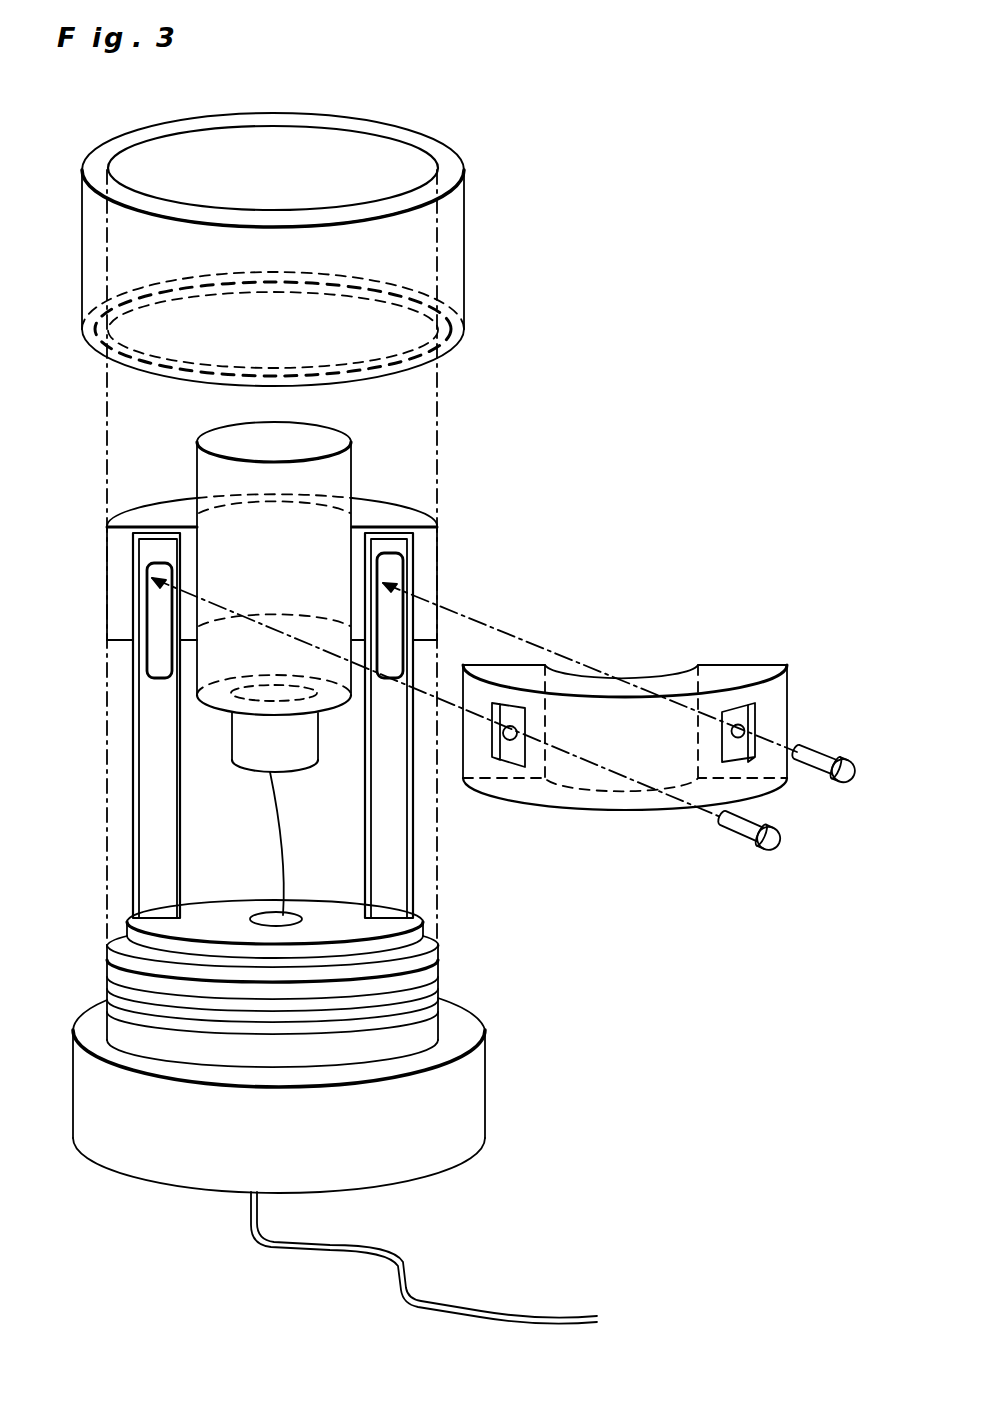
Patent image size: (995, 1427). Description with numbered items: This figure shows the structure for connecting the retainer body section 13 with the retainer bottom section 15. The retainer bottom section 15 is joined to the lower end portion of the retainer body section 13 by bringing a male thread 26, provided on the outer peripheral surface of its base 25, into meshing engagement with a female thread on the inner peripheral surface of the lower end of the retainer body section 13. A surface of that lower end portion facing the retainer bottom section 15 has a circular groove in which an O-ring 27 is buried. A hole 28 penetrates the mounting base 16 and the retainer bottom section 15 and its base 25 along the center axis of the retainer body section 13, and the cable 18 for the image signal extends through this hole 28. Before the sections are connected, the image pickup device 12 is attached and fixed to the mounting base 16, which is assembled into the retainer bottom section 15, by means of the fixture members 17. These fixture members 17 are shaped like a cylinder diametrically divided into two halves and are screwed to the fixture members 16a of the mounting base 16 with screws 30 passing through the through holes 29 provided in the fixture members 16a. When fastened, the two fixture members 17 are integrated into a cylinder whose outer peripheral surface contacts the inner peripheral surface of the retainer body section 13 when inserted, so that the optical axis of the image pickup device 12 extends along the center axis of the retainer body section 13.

The image pickup device 12 is at (352, 460).
The retainer body section 13 is at (465, 256).
The retainer bottom section 15 is at (485, 1122).
The mounting base 16 is at (128, 925).
The fixture members 16a is at (133, 750).
The fixture members 17 is at (437, 513).
The cable 18 is at (275, 1255).
The base 25 is at (440, 940).
The male thread 26 is at (438, 993).
The O-ring 27 is at (448, 340).
The hole 28 is at (258, 917).
The through holes 29 is at (397, 572).
The screws 30 is at (833, 781).